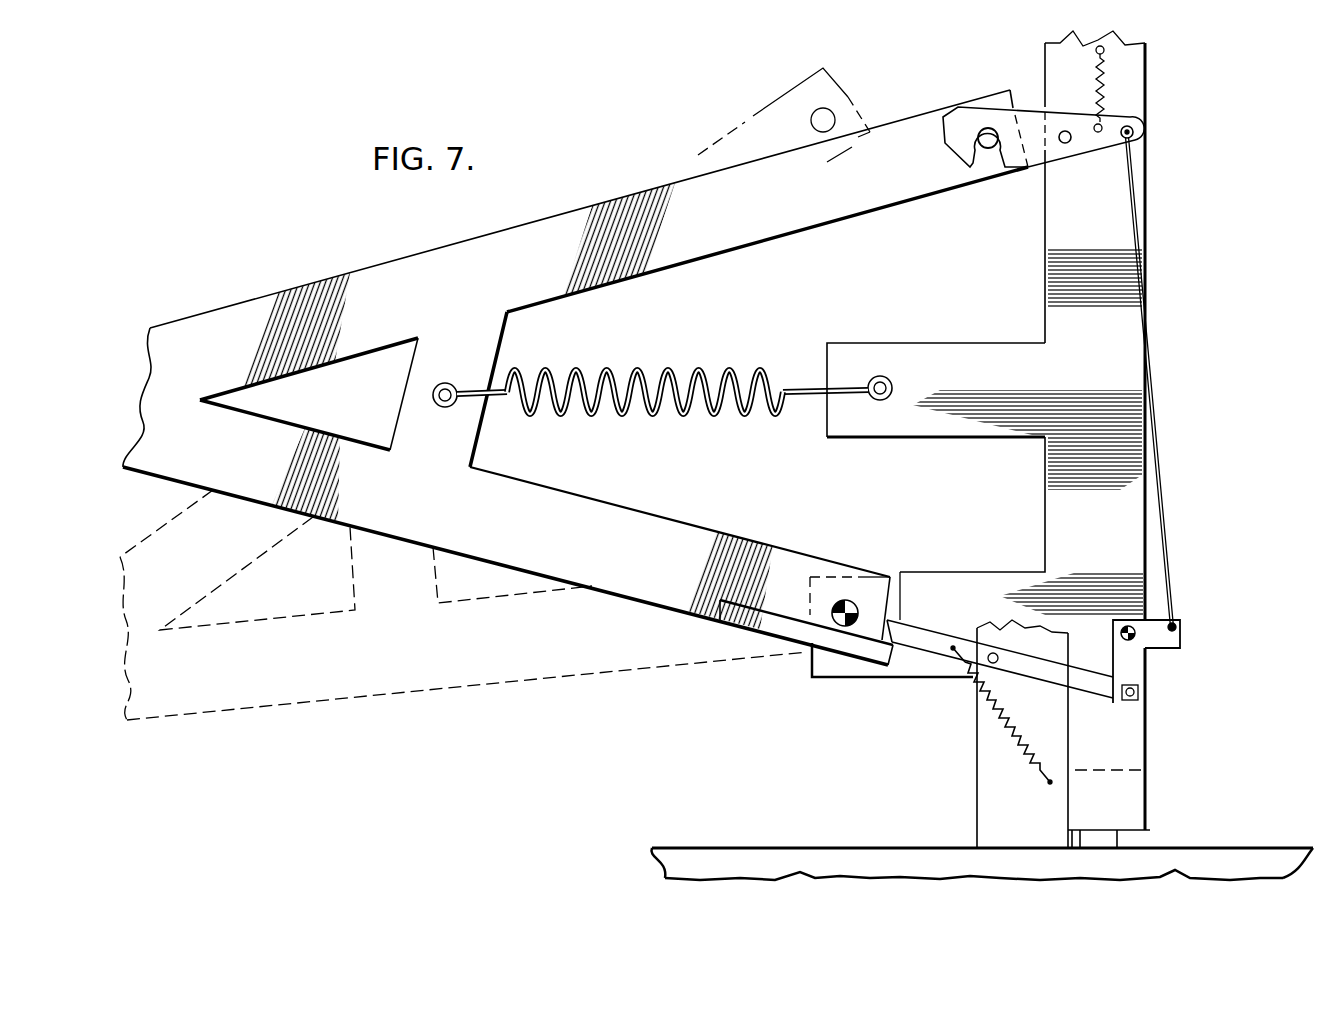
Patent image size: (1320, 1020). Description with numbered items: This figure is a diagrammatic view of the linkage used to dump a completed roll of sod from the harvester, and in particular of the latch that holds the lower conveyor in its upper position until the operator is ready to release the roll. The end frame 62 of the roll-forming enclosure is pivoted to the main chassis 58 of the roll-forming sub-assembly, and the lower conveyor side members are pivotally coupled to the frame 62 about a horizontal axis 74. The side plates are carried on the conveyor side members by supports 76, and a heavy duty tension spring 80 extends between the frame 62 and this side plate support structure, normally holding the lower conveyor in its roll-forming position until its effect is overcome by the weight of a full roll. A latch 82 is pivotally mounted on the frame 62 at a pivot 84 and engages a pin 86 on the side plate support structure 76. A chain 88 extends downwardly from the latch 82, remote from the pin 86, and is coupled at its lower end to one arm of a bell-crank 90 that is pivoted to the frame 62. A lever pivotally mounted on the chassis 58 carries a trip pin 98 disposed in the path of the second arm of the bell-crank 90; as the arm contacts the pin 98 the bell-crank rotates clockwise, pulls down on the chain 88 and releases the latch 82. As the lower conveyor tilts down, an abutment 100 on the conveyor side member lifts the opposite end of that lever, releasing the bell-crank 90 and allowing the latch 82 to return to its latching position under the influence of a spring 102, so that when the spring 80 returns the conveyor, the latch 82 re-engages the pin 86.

The chassis 58 is at (966, 790).
The end frame 62 is at (1157, 234).
The horizontal axis 74 is at (852, 592).
The supports 76 is at (562, 206).
The tension spring 80 is at (745, 354).
The latch 82 is at (1128, 128).
The latch pivot 84 is at (1063, 131).
The pin 86 is at (988, 149).
The chain 88 is at (1157, 435).
The bell-crank 90 is at (1190, 604).
The pin 98 is at (1140, 697).
The abutment 100 is at (877, 665).
The spring 102 is at (1103, 80).